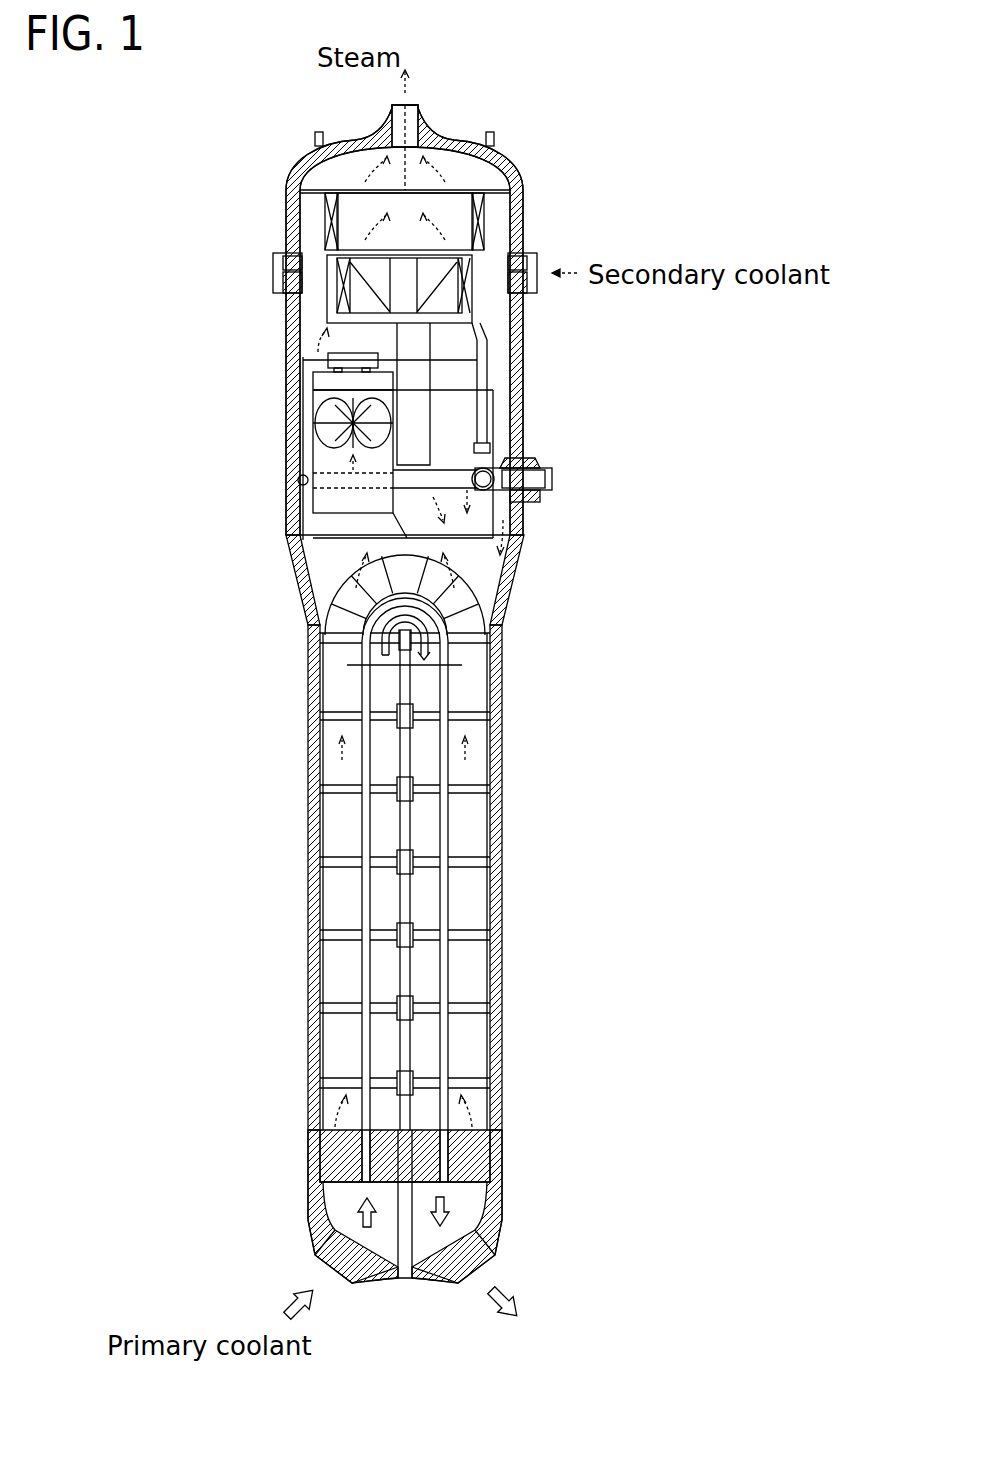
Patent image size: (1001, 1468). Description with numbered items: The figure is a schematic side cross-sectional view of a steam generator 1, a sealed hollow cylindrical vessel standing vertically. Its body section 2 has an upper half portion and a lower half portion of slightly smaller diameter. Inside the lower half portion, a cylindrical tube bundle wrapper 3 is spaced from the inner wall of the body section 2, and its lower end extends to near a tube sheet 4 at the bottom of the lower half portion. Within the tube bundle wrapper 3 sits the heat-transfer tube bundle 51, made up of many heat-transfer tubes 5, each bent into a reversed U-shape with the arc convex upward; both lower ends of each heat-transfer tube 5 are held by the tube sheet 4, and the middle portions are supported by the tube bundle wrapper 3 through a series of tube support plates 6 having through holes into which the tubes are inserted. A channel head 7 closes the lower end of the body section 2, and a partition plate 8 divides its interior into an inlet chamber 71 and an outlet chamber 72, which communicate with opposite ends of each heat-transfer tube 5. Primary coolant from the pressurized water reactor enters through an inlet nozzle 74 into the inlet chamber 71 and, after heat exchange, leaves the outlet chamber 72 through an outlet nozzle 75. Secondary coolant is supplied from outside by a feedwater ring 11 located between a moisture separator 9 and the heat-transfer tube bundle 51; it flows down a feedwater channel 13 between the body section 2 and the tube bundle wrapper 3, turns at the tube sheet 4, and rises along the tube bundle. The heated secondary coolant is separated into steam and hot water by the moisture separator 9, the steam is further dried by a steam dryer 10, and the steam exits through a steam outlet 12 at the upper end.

The steam generator 1 is at (582, 133).
The body section 2 is at (287, 326).
The tube bundle wrapper 3 is at (298, 572).
The tube sheet 4 is at (503, 1157).
The heat-transfer tube 5 is at (360, 820).
The tube support plate 6 is at (463, 712).
The channel head 7 is at (312, 1183).
The partition plate 8 is at (405, 1282).
The moisture separator 9 is at (332, 412).
The steam dryer 10 is at (458, 213).
The feedwater ring 11 is at (528, 458).
The steam outlet 12 is at (410, 124).
The feedwater channel 13 is at (312, 968).
The heat-transfer tube bundle 51 is at (460, 607).
The inlet chamber 71 is at (347, 1210).
The outlet chamber 72 is at (467, 1213).
The inlet nozzle 74 is at (350, 1284).
The outlet nozzle 75 is at (462, 1284).